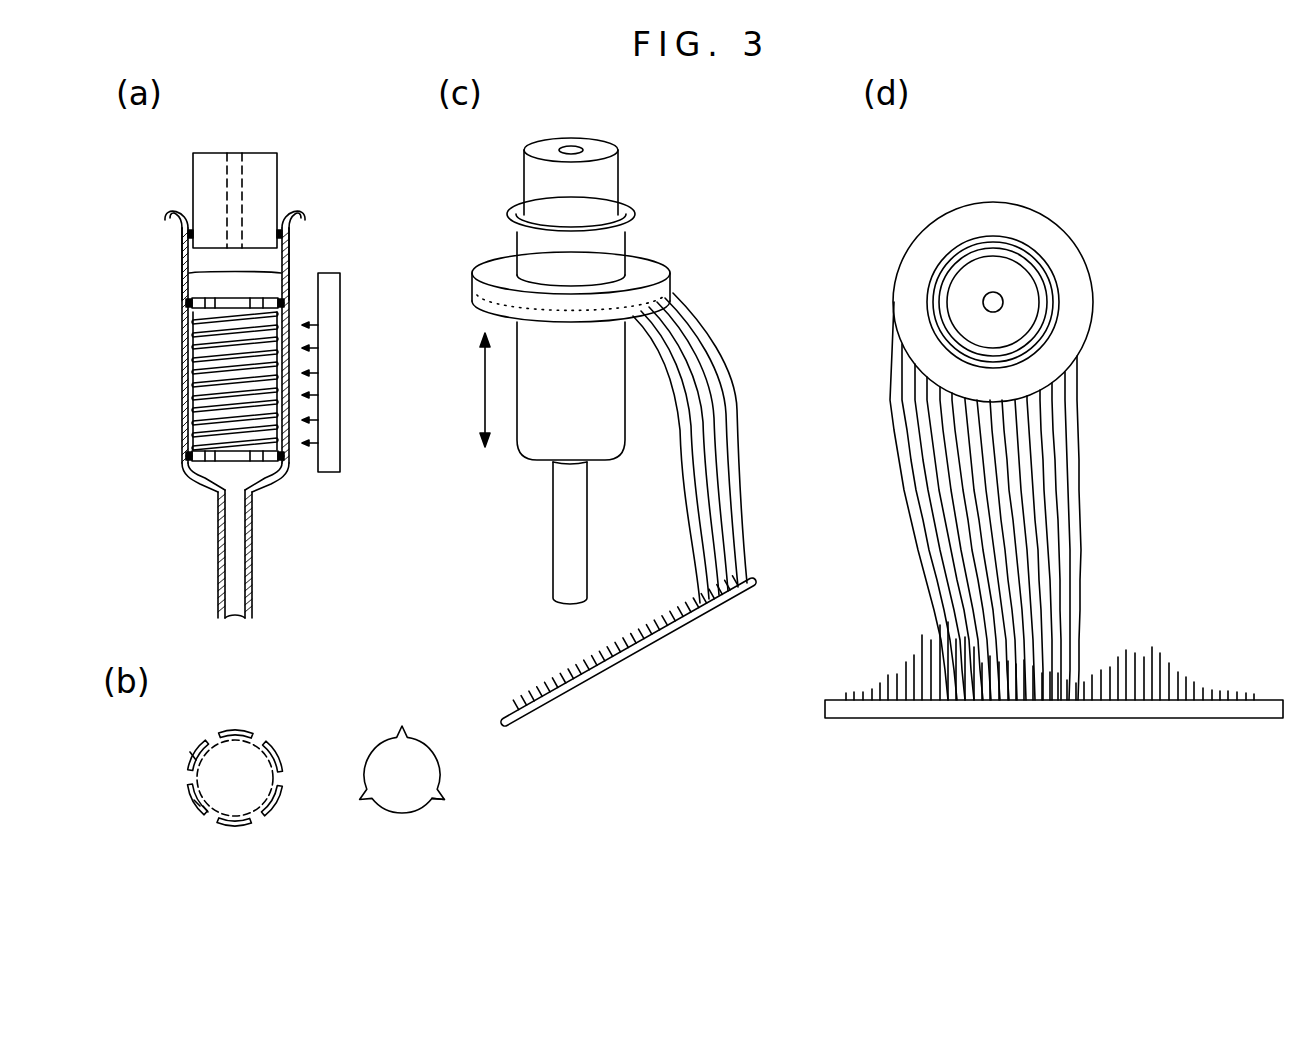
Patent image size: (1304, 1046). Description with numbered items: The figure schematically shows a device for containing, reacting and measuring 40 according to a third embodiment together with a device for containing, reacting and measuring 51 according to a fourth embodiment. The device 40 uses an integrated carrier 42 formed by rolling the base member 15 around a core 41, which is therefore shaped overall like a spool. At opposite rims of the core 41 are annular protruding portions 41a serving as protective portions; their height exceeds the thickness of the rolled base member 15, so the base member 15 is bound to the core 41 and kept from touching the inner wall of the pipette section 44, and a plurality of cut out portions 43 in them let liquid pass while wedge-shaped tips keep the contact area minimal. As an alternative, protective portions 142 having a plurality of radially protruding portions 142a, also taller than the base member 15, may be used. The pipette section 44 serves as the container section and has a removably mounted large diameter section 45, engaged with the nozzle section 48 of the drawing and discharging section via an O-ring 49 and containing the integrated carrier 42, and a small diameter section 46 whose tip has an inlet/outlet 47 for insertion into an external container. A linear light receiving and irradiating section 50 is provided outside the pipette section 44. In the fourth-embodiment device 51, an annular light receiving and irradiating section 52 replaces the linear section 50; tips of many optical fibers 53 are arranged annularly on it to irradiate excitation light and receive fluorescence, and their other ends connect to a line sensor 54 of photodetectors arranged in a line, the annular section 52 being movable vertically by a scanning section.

The base member 15 is at (200, 400).
The device for containing, reacting and measuring 40 is at (291, 119).
The core 41 is at (285, 458).
The annular protruding portion 41a is at (190, 318).
The integrated carrier 42 is at (217, 300).
The cut out portion 43 is at (196, 452).
The pipette section 44 is at (290, 240).
The large diameter section 45 is at (190, 260).
The small diameter section 46 is at (252, 572).
The inlet/outlet 47 is at (233, 618).
The nozzle section 48 is at (260, 185).
The O-ring 49 is at (185, 232).
The linear light receiving and irradiating section 50 is at (341, 358).
The device for containing, reacting and measuring 51 is at (674, 119).
The annular light receiving and irradiating section 52 is at (666, 280).
The optical fibers 53 is at (720, 355).
The line sensor 54 is at (648, 660).
The protective portion 142 is at (416, 743).
The radially protruding portion 142a is at (438, 803).